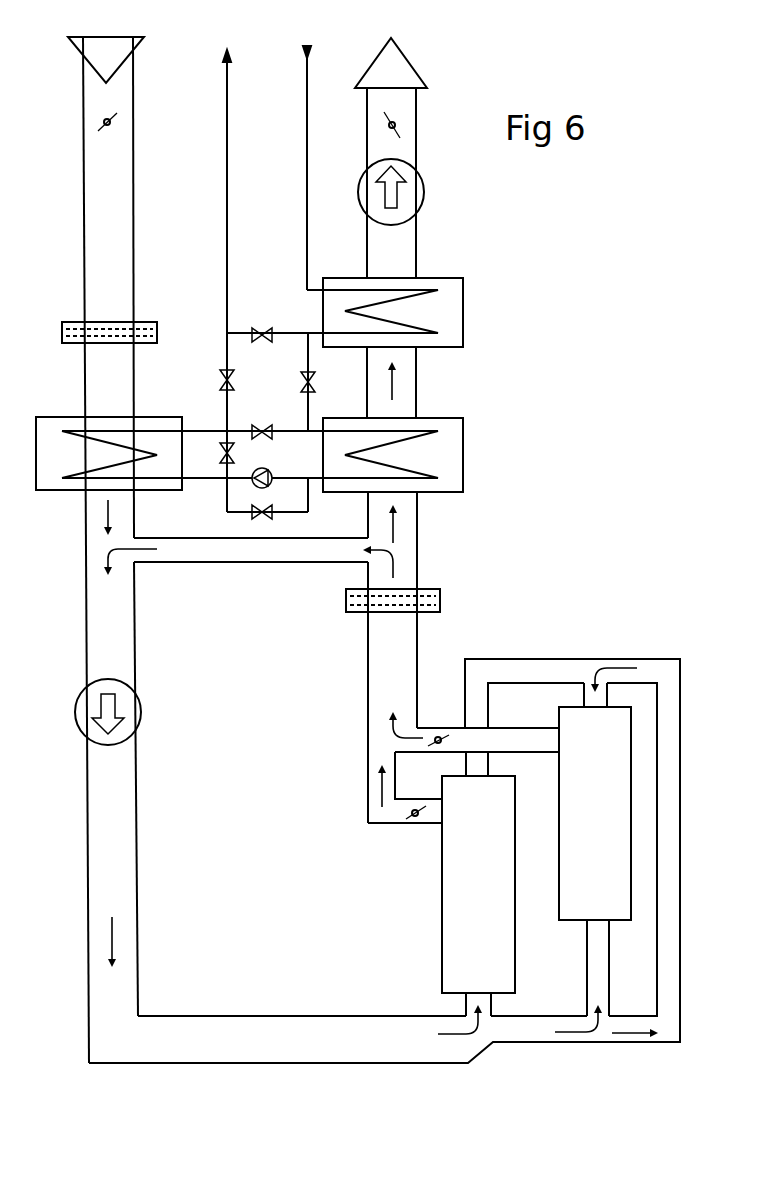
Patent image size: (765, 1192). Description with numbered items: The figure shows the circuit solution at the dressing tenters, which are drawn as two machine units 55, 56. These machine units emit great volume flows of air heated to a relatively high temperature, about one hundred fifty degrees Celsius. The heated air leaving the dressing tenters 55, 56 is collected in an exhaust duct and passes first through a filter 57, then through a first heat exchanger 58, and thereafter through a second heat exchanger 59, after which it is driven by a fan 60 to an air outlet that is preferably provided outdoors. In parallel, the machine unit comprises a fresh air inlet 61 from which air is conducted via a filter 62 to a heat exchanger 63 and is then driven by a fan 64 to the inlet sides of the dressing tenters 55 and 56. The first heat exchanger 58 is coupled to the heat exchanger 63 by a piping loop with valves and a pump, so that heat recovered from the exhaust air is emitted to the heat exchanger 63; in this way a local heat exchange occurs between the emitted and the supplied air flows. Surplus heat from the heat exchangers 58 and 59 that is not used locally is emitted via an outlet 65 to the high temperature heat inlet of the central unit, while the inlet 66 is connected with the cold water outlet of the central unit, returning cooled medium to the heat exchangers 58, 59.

The dressing tenter machine unit 55 is at (478, 884).
The dressing tenter machine unit 56 is at (595, 849).
The filter 57 is at (440, 607).
The first heat exchanger 58 is at (463, 460).
The second heat exchanger 59 is at (463, 320).
The fan 60 is at (424, 193).
The fresh air inlet 61 is at (92, 100).
The filter 62 is at (62, 338).
The heat exchanger 63 is at (52, 480).
The fan 64 is at (78, 717).
The outlet 65 is at (227, 88).
The inlet 66 is at (305, 50).